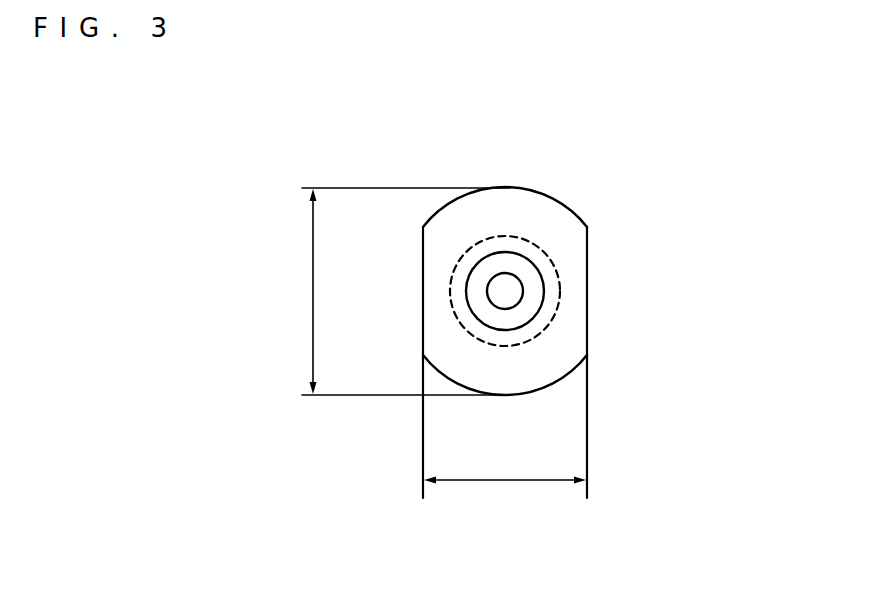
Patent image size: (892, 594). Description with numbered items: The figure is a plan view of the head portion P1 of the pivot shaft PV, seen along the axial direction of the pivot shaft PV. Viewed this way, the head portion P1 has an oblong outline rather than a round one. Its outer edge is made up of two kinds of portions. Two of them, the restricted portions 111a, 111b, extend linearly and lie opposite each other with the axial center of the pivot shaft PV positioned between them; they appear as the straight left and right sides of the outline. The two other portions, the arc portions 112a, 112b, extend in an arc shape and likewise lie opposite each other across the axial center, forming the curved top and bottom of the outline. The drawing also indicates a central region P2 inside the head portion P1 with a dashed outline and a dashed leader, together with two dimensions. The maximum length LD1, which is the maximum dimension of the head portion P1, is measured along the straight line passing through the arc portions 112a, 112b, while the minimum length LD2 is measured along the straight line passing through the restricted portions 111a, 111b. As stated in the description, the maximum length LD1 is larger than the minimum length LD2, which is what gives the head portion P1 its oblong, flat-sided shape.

The pivot shaft PV is at (672, 133).
The head portion P1 is at (462, 227).
The second portion (central region) P2 is at (560, 293).
The restricted portion 111a is at (423, 293).
The restricted portion 111b is at (587, 272).
The arc portion 112a is at (537, 194).
The arc portion 112b is at (535, 394).
The maximum length LD1 is at (387, 291).
The minimum length LD2 is at (505, 499).